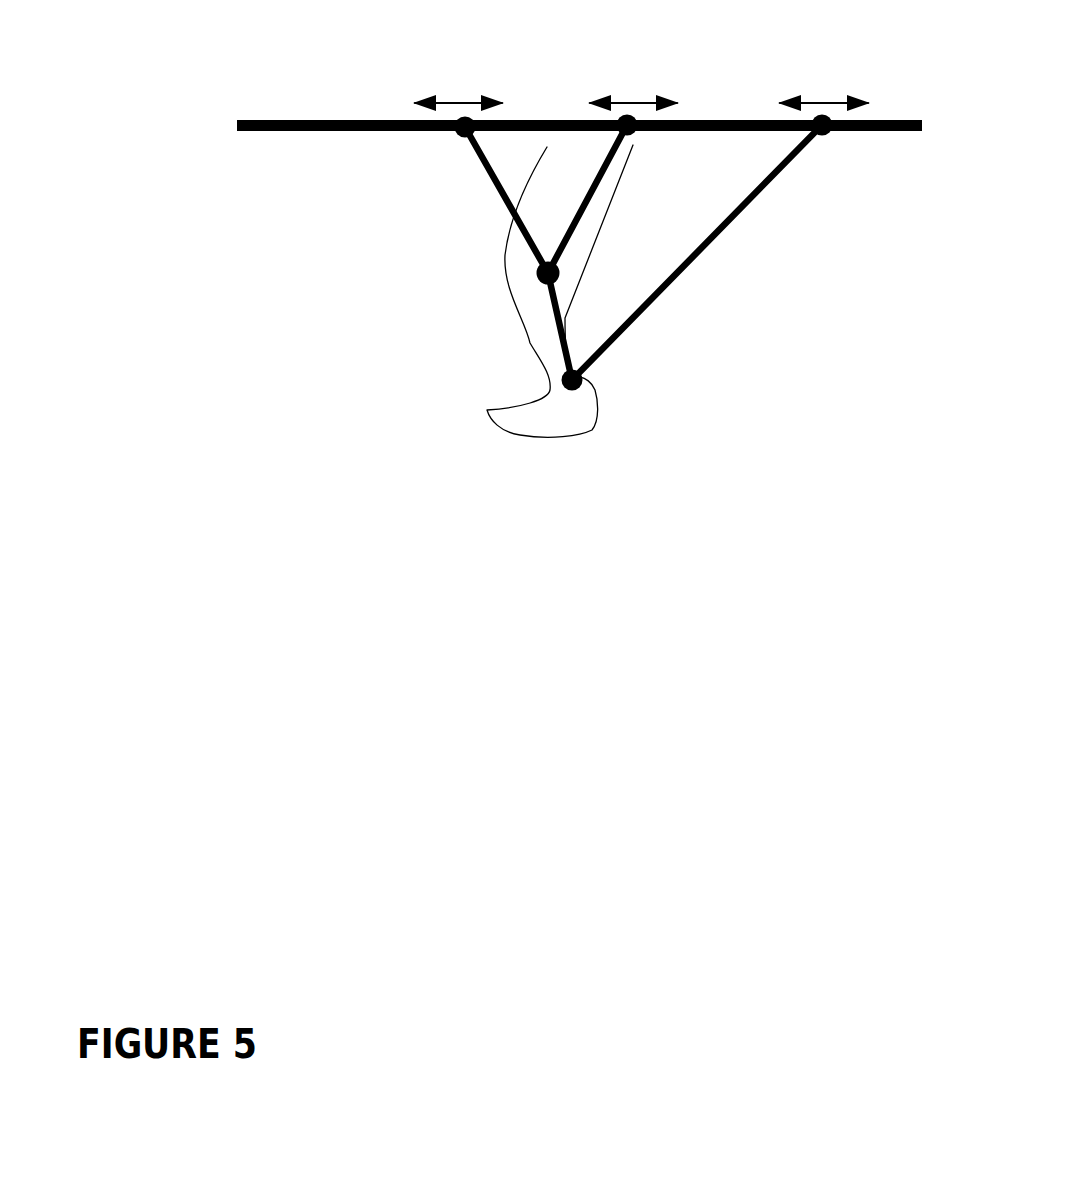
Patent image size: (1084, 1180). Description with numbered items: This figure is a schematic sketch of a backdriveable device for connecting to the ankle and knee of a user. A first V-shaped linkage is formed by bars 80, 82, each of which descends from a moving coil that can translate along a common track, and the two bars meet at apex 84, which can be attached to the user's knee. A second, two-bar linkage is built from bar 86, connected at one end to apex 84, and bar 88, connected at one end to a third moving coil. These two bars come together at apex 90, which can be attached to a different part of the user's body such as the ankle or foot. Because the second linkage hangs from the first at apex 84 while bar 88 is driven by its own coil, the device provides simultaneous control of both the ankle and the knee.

The bar 80 is at (473, 167).
The bar 82 is at (602, 177).
The apex 84 is at (540, 278).
The bar 86 is at (555, 335).
The bar 88 is at (725, 235).
The apex 90 is at (583, 380).